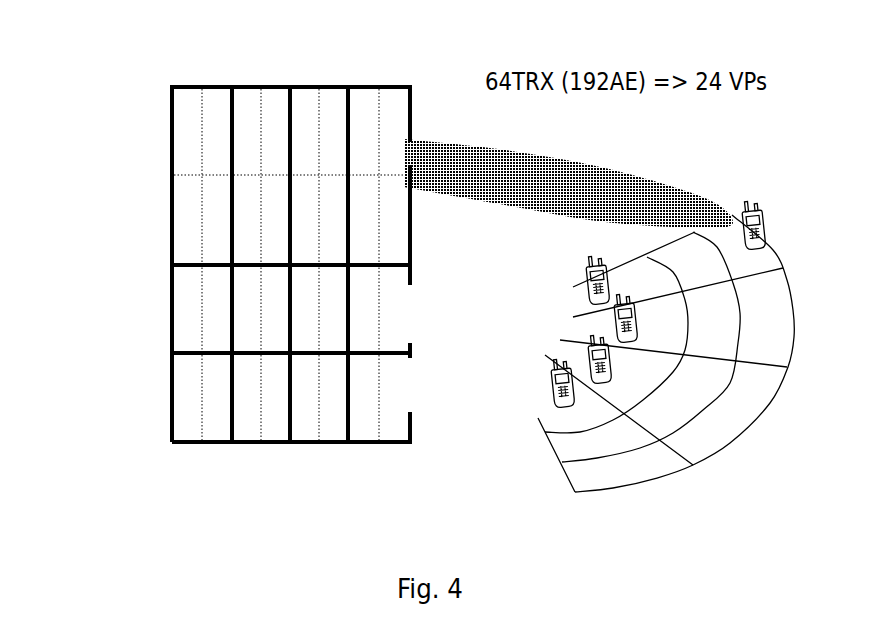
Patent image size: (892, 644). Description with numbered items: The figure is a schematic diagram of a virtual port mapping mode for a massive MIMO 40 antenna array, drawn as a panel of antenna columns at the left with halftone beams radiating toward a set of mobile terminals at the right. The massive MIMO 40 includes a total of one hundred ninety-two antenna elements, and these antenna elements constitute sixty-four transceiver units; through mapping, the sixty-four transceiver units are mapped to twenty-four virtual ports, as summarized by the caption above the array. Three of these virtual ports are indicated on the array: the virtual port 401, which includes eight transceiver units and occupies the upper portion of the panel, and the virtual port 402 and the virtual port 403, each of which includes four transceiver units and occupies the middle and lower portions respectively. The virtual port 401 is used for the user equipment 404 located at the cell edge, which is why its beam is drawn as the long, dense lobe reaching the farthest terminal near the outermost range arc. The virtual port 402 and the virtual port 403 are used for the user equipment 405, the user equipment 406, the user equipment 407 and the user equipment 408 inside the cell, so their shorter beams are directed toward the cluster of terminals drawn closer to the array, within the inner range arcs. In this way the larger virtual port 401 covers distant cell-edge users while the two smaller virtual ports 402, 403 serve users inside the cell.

The massive MIMO 40 is at (170, 443).
The virtual port 401 is at (310, 103).
The virtual port 402 is at (400, 298).
The virtual port 403 is at (392, 420).
The user equipment 404 is at (762, 240).
The user equipment 405 is at (616, 280).
The user equipment 406 is at (644, 318).
The user equipment 407 is at (618, 364).
The user equipment 408 is at (581, 393).